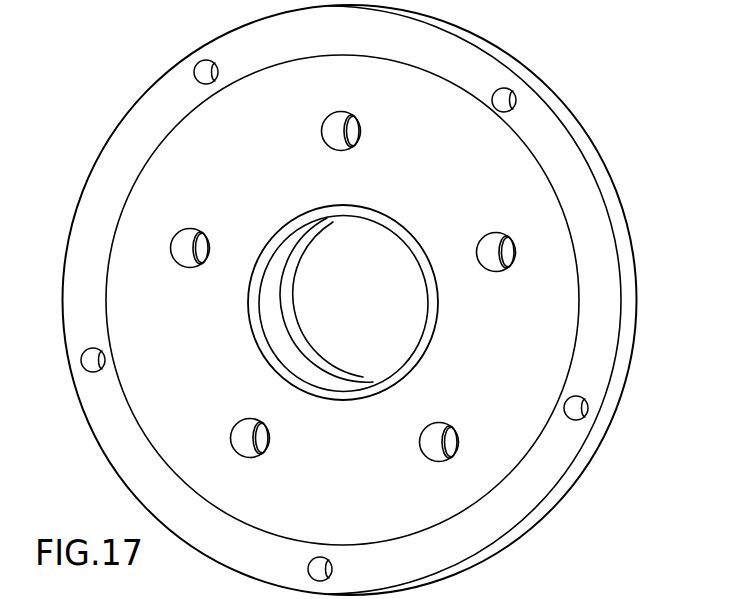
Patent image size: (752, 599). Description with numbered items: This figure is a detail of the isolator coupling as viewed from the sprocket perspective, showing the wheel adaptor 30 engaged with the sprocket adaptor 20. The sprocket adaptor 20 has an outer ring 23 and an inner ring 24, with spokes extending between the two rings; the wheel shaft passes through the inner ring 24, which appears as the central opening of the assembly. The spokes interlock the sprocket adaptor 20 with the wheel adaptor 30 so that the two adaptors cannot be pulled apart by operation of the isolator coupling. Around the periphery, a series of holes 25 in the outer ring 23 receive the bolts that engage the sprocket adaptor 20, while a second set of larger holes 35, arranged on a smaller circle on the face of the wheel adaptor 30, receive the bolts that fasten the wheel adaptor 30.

The sprocket adaptor 20 is at (568, 110).
The outer ring 23 is at (519, 533).
The inner ring 24 is at (283, 320).
The holes 25 is at (582, 416).
The wheel adaptor 30 is at (420, 107).
The holes 35 is at (322, 132).